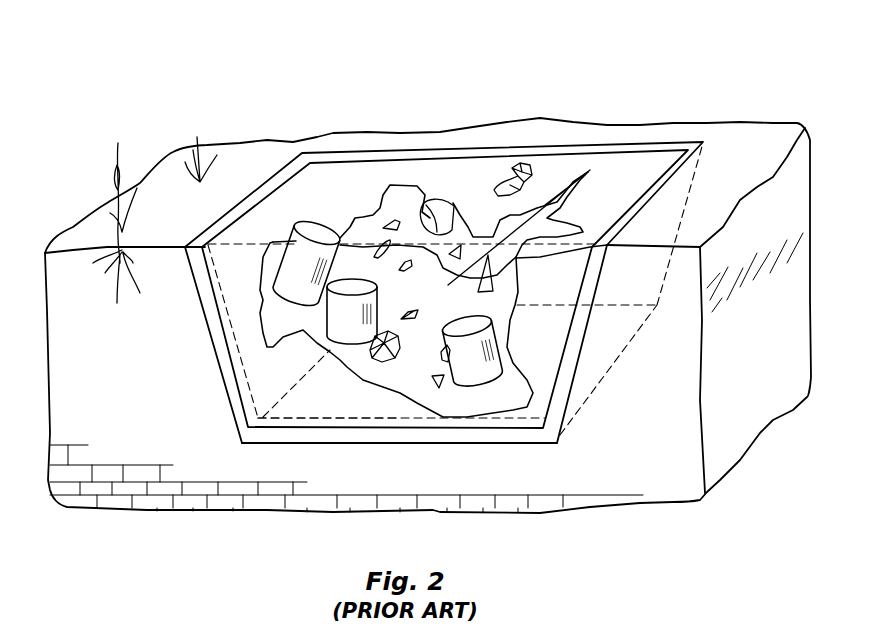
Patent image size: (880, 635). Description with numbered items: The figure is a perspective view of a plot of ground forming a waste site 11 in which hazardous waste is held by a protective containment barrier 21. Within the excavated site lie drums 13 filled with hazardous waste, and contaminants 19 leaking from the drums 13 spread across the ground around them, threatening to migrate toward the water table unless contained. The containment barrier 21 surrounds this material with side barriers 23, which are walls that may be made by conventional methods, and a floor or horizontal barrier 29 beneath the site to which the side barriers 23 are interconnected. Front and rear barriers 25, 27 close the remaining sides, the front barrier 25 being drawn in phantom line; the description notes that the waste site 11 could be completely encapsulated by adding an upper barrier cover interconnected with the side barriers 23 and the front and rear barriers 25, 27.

The waste site 11 is at (360, 216).
The drums 13 is at (477, 368).
The contaminants 19 is at (417, 360).
The containment barrier 21 is at (707, 107).
The side barriers 23 is at (265, 183).
The front barrier 25 is at (307, 417).
The rear barrier 27 is at (628, 173).
The horizontal barrier 29 is at (338, 436).